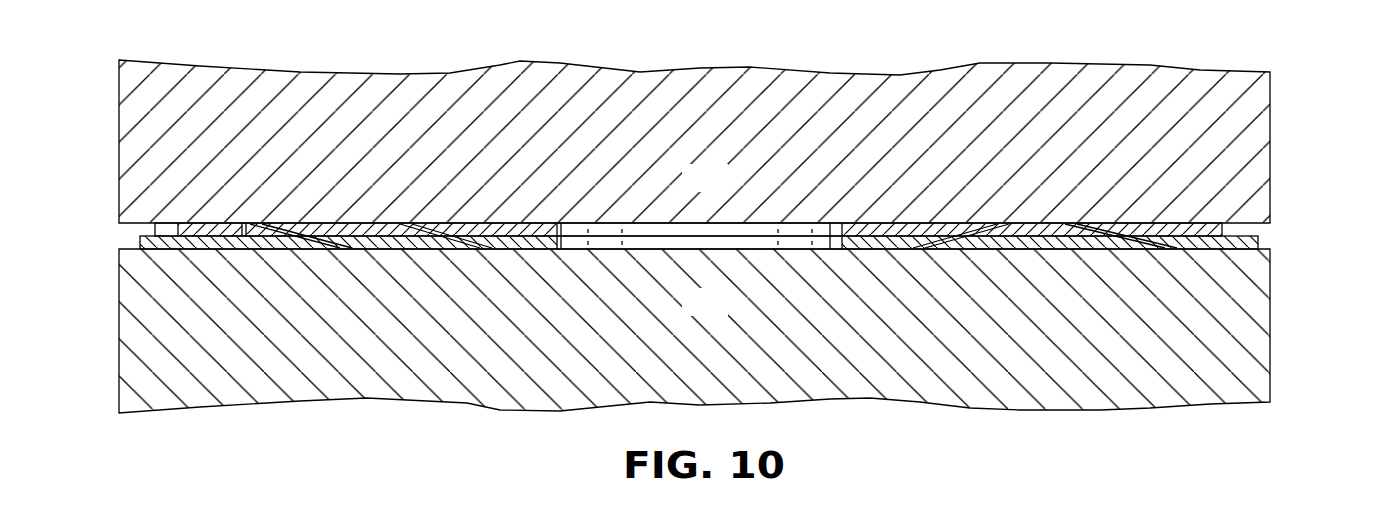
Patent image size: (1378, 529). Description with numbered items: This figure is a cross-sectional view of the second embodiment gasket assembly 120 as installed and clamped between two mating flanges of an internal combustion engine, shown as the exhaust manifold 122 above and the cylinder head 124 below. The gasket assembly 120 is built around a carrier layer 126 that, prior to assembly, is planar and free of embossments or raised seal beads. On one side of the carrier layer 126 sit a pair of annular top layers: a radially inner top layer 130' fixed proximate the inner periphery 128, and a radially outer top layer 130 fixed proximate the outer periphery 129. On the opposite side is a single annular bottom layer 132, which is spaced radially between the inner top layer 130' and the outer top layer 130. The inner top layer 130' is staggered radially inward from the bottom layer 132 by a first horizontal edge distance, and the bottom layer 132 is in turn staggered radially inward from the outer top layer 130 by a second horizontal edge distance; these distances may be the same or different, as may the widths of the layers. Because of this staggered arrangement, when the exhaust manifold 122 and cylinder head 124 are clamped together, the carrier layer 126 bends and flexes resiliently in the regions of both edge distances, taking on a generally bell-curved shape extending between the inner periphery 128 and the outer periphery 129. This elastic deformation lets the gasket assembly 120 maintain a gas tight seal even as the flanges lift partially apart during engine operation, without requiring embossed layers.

The gasket assembly 120 is at (1300, 97).
The exhaust manifold 122 is at (722, 189).
The cylinder head 124 is at (722, 313).
The carrier layer 126 is at (157, 233).
The inner periphery 128 is at (557, 240).
The outer periphery 129 is at (1262, 242).
The outer top layer 130 is at (1206, 203).
The inner top layer 130' is at (936, 131).
The bottom layer 132 is at (345, 238).